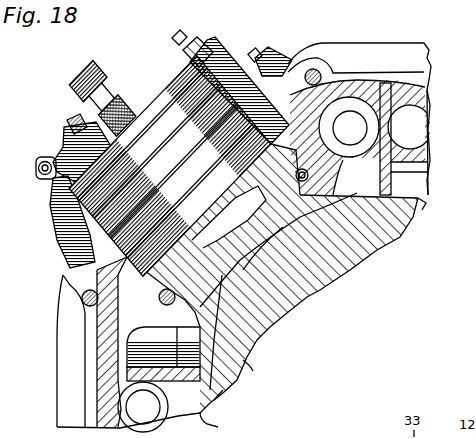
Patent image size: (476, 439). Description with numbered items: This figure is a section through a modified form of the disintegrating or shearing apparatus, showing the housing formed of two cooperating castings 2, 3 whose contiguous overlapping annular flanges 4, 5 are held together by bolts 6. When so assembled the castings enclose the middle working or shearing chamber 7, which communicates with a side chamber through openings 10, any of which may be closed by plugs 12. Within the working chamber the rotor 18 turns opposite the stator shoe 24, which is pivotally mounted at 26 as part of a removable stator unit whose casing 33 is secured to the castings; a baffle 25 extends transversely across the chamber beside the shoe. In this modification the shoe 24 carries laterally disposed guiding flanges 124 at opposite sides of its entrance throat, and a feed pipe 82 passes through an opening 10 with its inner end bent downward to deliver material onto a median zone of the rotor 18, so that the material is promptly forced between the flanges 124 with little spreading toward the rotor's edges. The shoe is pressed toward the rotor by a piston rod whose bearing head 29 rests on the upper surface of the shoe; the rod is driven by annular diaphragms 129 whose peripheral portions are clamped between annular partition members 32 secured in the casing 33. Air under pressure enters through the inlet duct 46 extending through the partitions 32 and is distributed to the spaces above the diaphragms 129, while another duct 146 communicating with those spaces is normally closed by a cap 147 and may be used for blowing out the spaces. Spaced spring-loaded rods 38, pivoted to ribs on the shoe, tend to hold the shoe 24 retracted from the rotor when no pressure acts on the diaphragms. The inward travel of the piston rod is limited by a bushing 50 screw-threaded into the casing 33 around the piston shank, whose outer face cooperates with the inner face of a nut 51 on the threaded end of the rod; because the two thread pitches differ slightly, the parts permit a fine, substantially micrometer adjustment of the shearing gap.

The casting 2 is at (428, 55).
The casting 3 is at (428, 90).
The annular flange 4 is at (380, 73).
The annular flange 5 is at (392, 88).
The bolt 6 is at (316, 70).
The working or shearing chamber 7 is at (276, 243).
The opening 10 is at (407, 127).
The plug 12 is at (248, 264).
The rotor member 18 is at (421, 205).
The shoe 24 is at (343, 273).
The baffle 25 is at (392, 153).
The pivot 26 is at (260, 323).
The bearing head 29 is at (229, 217).
The annular partition member 32 is at (170, 166).
The casing 33 is at (70, 148).
The rod 38 is at (294, 169).
The inlet duct 46 is at (40, 180).
The bushing 50 is at (93, 123).
The nut 51 is at (82, 90).
The feed pipe 82 is at (224, 390).
The guiding flange 124 is at (261, 376).
The annular diaphragm 129 is at (238, 66).
The duct 146 is at (197, 37).
The cap 147 is at (180, 32).